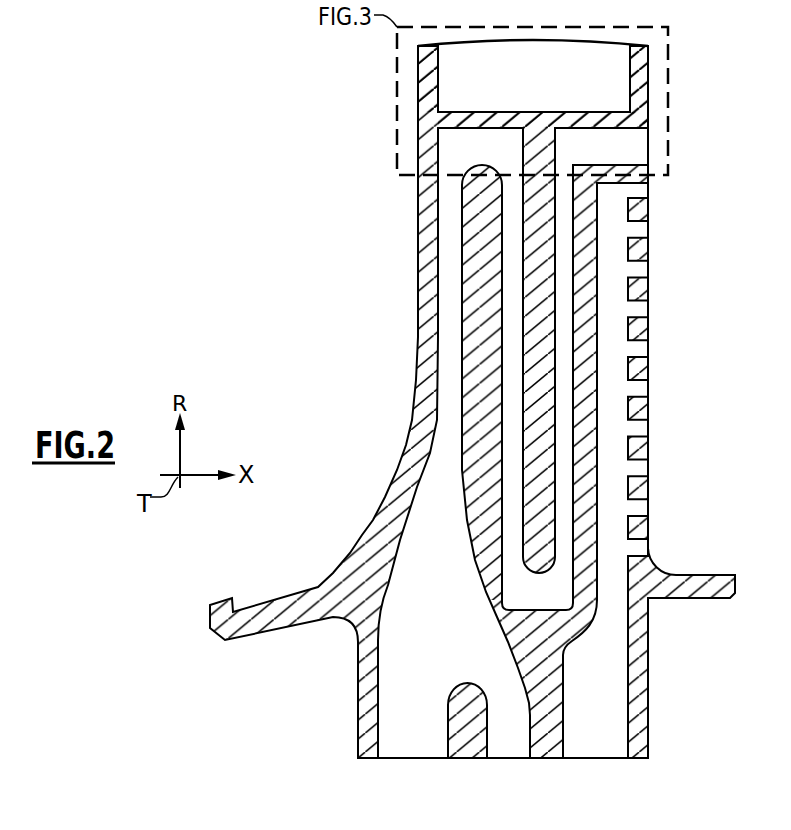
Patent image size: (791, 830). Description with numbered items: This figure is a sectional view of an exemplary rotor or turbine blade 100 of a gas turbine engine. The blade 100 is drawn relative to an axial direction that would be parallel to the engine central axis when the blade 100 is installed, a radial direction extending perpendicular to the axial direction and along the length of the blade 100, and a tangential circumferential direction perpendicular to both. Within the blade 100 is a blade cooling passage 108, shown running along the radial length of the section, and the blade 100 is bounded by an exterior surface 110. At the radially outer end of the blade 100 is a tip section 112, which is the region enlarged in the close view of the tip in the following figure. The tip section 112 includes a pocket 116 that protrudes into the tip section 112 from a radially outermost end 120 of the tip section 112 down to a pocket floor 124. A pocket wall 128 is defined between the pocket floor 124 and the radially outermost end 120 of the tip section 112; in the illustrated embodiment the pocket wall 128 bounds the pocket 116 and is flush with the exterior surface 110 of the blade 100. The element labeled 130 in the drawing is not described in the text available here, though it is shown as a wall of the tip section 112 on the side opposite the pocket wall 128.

The turbine blade 100 is at (326, 229).
The blade cooling passage 108 is at (563, 307).
The exterior surface 110 is at (418, 241).
The tip section 112 is at (340, 142).
The pocket 116 is at (532, 103).
The radially outermost end 120 is at (612, 45).
The pocket floor 124 is at (601, 112).
The pocket wall 128 is at (640, 92).
The pressure side tip wall 130 is at (438, 68).